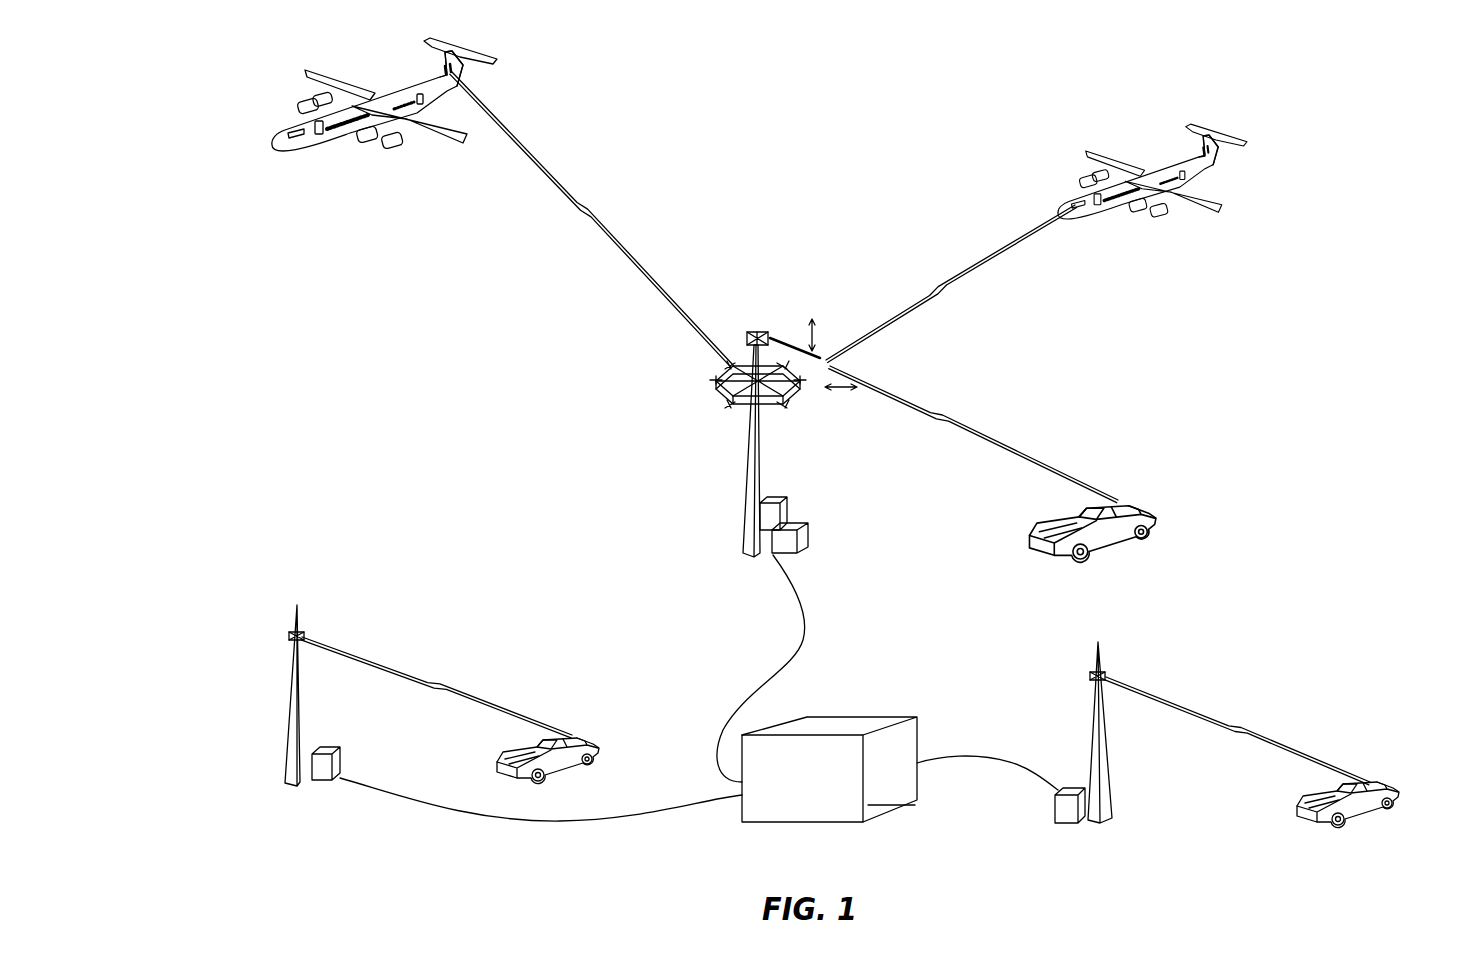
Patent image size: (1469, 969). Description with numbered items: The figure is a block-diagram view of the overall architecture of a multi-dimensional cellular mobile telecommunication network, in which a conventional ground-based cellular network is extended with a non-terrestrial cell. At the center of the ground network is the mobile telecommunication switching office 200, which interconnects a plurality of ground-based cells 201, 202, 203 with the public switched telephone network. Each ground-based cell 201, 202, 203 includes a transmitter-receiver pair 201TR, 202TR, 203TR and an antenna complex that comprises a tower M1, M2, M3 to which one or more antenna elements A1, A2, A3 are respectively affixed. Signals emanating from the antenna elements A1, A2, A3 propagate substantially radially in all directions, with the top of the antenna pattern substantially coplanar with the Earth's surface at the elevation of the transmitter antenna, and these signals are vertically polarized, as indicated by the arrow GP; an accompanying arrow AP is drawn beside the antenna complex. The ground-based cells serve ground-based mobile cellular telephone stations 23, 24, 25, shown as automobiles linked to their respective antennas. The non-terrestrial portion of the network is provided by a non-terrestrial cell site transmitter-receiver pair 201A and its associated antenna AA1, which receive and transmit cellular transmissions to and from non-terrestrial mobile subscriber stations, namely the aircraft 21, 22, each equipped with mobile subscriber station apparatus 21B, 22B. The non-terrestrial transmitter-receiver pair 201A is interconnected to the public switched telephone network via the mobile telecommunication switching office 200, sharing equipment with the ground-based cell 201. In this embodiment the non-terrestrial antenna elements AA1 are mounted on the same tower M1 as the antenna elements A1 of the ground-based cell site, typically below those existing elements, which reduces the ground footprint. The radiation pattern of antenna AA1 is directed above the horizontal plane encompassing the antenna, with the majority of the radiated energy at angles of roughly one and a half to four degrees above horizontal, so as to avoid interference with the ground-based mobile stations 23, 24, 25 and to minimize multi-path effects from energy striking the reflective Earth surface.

The aircraft 21 is at (312, 142).
The mobile subscriber station apparatus 21B is at (455, 68).
The aircraft 22 is at (1087, 213).
The mobile subscriber station apparatus 22B is at (1223, 150).
The ground-based mobile cellular telephone station 23 is at (1118, 502).
The ground-based mobile cellular telephone station 24 is at (567, 737).
The ground-based mobile cellular telephone station 25 is at (1368, 780).
The mobile telecommunication switching office 200 is at (880, 722).
The ground-based cell 201 is at (765, 407).
The non-terrestrial cell site transmitter-receiver pair 201A is at (788, 508).
The transmitter-receiver pair 201TR is at (807, 535).
The ground-based cell 202 is at (317, 695).
The transmitter-receiver pair 202TR is at (337, 762).
The ground-based cell 203 is at (1125, 754).
The transmitter-receiver pair 203TR is at (1060, 815).
The antenna element A1 is at (756, 331).
The antenna element A2 is at (290, 638).
The antenna element A3 is at (1105, 673).
The non-terrestrial cell site antenna AA1 is at (722, 390).
The tower M1 is at (768, 442).
The tower M2 is at (307, 697).
The tower M3 is at (1107, 730).
The arrow indicating vertical polarization GP is at (829, 335).
The azimuth pattern direction AP is at (841, 400).